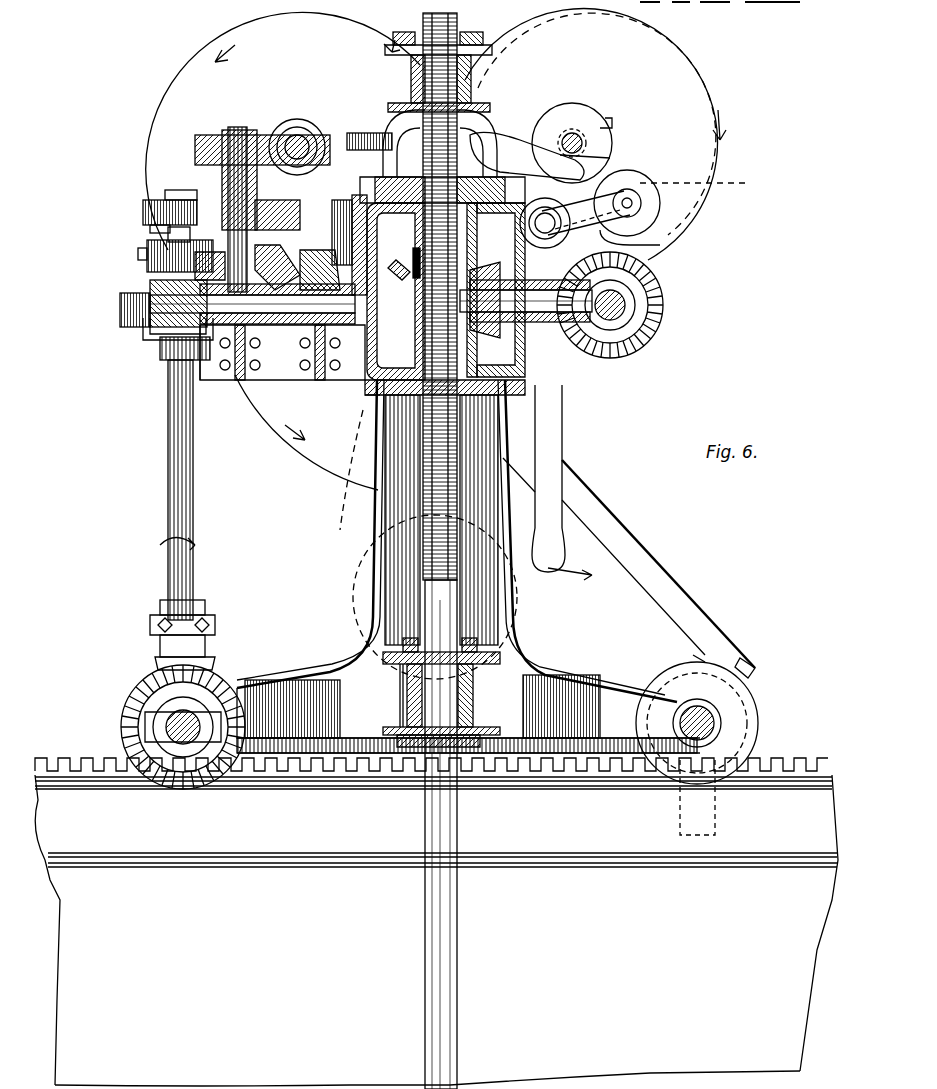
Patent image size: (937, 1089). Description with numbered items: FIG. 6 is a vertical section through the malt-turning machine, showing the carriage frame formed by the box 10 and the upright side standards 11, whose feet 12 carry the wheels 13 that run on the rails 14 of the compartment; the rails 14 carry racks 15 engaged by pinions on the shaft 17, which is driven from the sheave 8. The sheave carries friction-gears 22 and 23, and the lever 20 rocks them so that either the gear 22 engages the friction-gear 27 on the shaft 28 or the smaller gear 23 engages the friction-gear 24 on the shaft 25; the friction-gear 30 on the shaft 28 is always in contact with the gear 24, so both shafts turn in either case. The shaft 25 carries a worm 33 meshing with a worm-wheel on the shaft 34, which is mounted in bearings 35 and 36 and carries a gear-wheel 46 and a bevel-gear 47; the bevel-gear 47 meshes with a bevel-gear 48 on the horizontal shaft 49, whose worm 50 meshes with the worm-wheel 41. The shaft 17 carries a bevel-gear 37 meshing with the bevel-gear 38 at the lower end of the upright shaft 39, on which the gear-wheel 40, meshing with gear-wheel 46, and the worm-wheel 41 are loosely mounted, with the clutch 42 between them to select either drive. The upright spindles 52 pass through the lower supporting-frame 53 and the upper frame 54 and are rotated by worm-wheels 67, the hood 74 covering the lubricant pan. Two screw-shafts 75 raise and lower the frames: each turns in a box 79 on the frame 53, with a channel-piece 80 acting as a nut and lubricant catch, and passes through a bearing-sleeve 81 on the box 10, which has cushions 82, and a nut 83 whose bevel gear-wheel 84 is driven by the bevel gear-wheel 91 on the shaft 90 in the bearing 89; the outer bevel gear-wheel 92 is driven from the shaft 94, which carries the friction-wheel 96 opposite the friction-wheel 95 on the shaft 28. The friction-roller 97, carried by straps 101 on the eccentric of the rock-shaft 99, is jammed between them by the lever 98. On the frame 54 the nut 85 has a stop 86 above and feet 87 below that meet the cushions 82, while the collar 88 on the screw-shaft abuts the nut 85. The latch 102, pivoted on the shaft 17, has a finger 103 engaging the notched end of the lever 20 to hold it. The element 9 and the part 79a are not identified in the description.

The sheave 8 is at (318, 455).
The frame column 9 is at (372, 618).
The box 10 is at (483, 400).
The upright side standards 11 is at (375, 570).
The feet 12 is at (468, 714).
The wheels 13 is at (758, 724).
The rails 14 is at (436, 930).
The racks 15 is at (575, 772).
The shaft 17 is at (183, 745).
The lever 20 is at (690, 600).
The friction-gear 22 is at (343, 470).
The friction-gear 23 is at (345, 365).
The friction-gear 24 is at (283, 131).
The shaft 25 is at (296, 134).
The friction-gear 27 is at (622, 124).
The shaft 28 is at (617, 150).
The friction-gear 30 is at (685, 92).
The worm 33 is at (305, 128).
The shaft 34 is at (240, 127).
The bearing 35 is at (222, 185).
The bearing 36 is at (236, 382).
The bevel-gear 37 is at (130, 712).
The bevel-gear 38 is at (155, 666).
The upright shaft 39 is at (193, 500).
The gear-wheel 40 is at (143, 210).
The worm-wheel 41 is at (120, 300).
The clutch 42 is at (147, 262).
The gear-wheel 46 is at (320, 270).
The bevel-gear 47 is at (247, 260).
The bevel-gear 48 is at (290, 345).
The horizontal shaft 49 is at (330, 362).
The worm 50 is at (150, 340).
The spindles 52 is at (440, 917).
The supporting-frame 53 is at (400, 705).
The frame 54 is at (474, 78).
The worm-wheel 67 is at (358, 133).
The hood 74 is at (586, 118).
The screw-shafts 75 is at (456, 566).
The box 79 is at (475, 690).
The collar lug 79a is at (472, 638).
The channel-piece 80 is at (425, 742).
The bearing-sleeve 81 is at (412, 232).
The cushions 82 is at (518, 205).
The nut 83 is at (415, 282).
The bevel gear-wheel 84 is at (396, 284).
The nut 85 is at (490, 128).
The cushion or stop 86 is at (458, 33).
The feet 87 is at (390, 180).
The collar 88 is at (500, 138).
The bearing 89 is at (530, 322).
The shaft 90 is at (556, 322).
The bevel gear-wheel 91 is at (483, 326).
The bevel gear-wheel 92 is at (600, 345).
The shaft 94 is at (640, 335).
The friction-wheel 95 is at (612, 157).
The friction-wheel 96 is at (663, 310).
The friction-roller 97 is at (650, 214).
The lever 98 is at (548, 466).
The rock-shaft 99 is at (547, 214).
The straps 101 is at (586, 213).
The latch 102 is at (755, 672).
The finger 103 is at (700, 657).